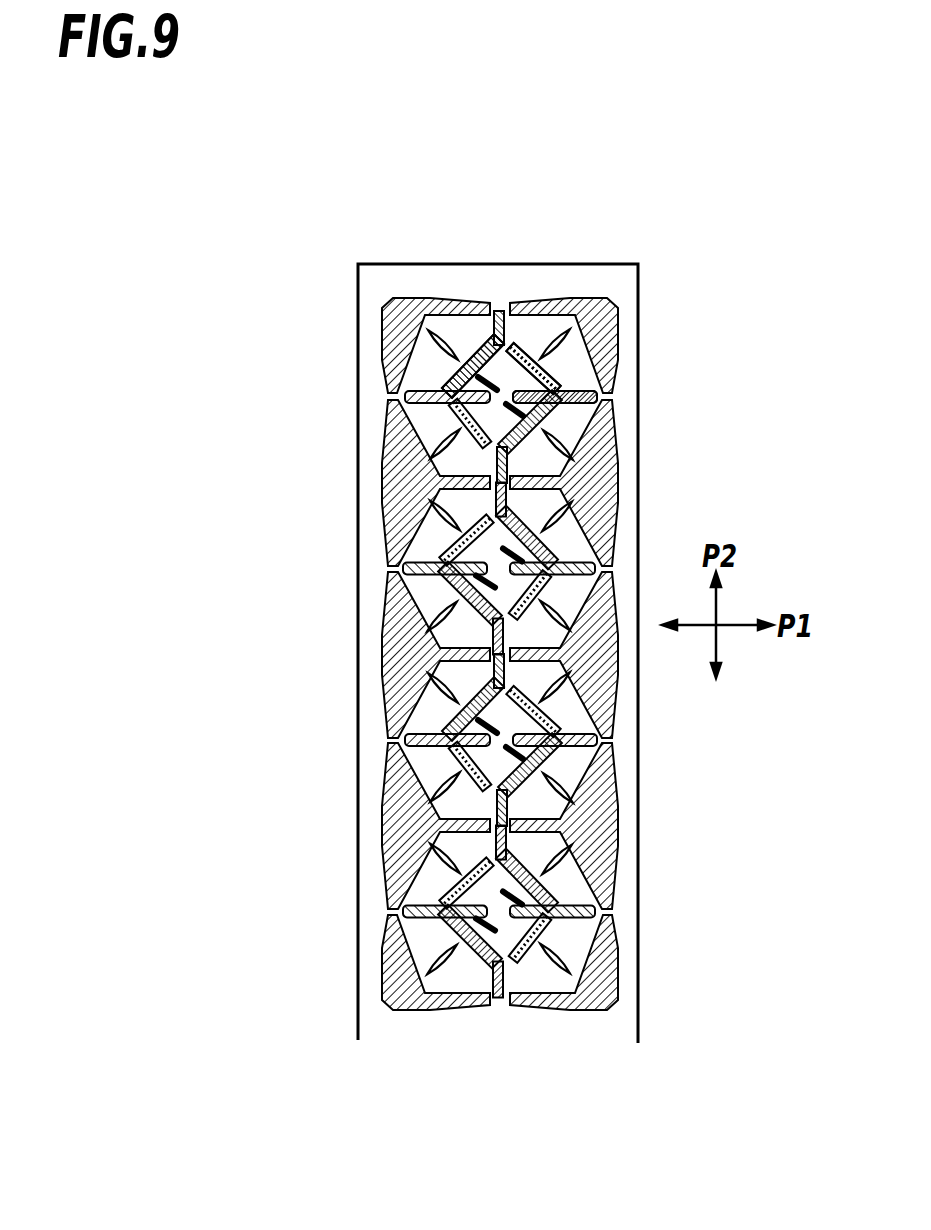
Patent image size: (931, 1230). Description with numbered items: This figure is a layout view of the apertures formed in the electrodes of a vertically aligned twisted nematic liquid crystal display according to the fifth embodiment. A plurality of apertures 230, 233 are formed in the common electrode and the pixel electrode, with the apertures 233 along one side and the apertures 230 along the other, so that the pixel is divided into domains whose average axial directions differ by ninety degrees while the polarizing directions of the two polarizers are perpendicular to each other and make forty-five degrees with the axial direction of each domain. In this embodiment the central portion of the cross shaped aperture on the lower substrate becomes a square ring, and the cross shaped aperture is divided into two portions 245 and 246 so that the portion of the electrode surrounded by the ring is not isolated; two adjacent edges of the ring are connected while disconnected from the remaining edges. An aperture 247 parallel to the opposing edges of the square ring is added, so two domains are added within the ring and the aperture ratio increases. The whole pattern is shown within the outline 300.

The aperture 230 is at (596, 466).
The aperture 233 is at (400, 483).
The portion of the cross shaped aperture 245 is at (478, 355).
The portion of the cross shaped aperture 246 is at (556, 388).
The aperture 247 is at (514, 348).
The frame 300 is at (641, 893).